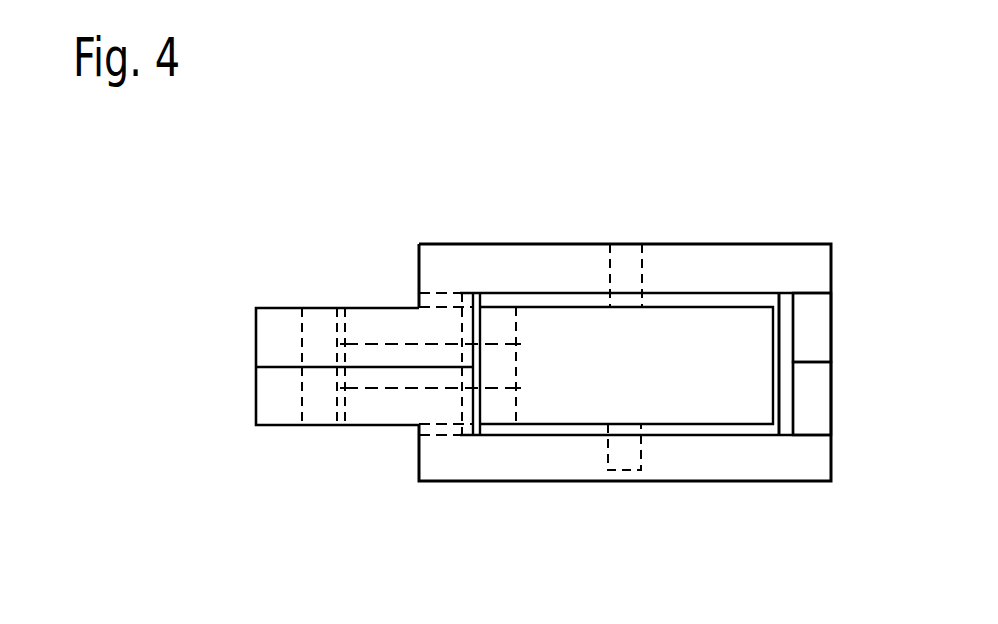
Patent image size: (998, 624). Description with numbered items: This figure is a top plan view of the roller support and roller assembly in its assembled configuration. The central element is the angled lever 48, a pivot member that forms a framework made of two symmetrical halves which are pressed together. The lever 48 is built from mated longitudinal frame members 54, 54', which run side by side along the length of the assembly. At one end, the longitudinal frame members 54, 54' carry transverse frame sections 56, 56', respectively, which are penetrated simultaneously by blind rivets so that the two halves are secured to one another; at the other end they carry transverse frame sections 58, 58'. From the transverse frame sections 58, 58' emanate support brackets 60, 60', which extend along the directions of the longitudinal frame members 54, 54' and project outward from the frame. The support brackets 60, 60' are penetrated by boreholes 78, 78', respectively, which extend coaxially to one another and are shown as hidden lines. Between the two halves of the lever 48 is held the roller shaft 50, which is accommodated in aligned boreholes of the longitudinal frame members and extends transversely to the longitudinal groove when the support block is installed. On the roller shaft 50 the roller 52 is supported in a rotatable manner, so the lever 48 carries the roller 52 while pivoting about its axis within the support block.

The angled lever 48 is at (692, 236).
The roller shaft 50 is at (643, 425).
The roller 52 is at (727, 332).
The longitudinal frame member 54 is at (615, 218).
The longitudinal frame member 54' is at (599, 505).
The transverse frame section 56 is at (881, 313).
The transverse frame section 56' is at (878, 398).
The transverse frame section 58 is at (419, 267).
The transverse frame section 58' is at (408, 477).
The support bracket 60 is at (332, 300).
The support bracket 60' is at (278, 431).
The borehole 78 is at (312, 273).
The borehole 78' is at (311, 448).